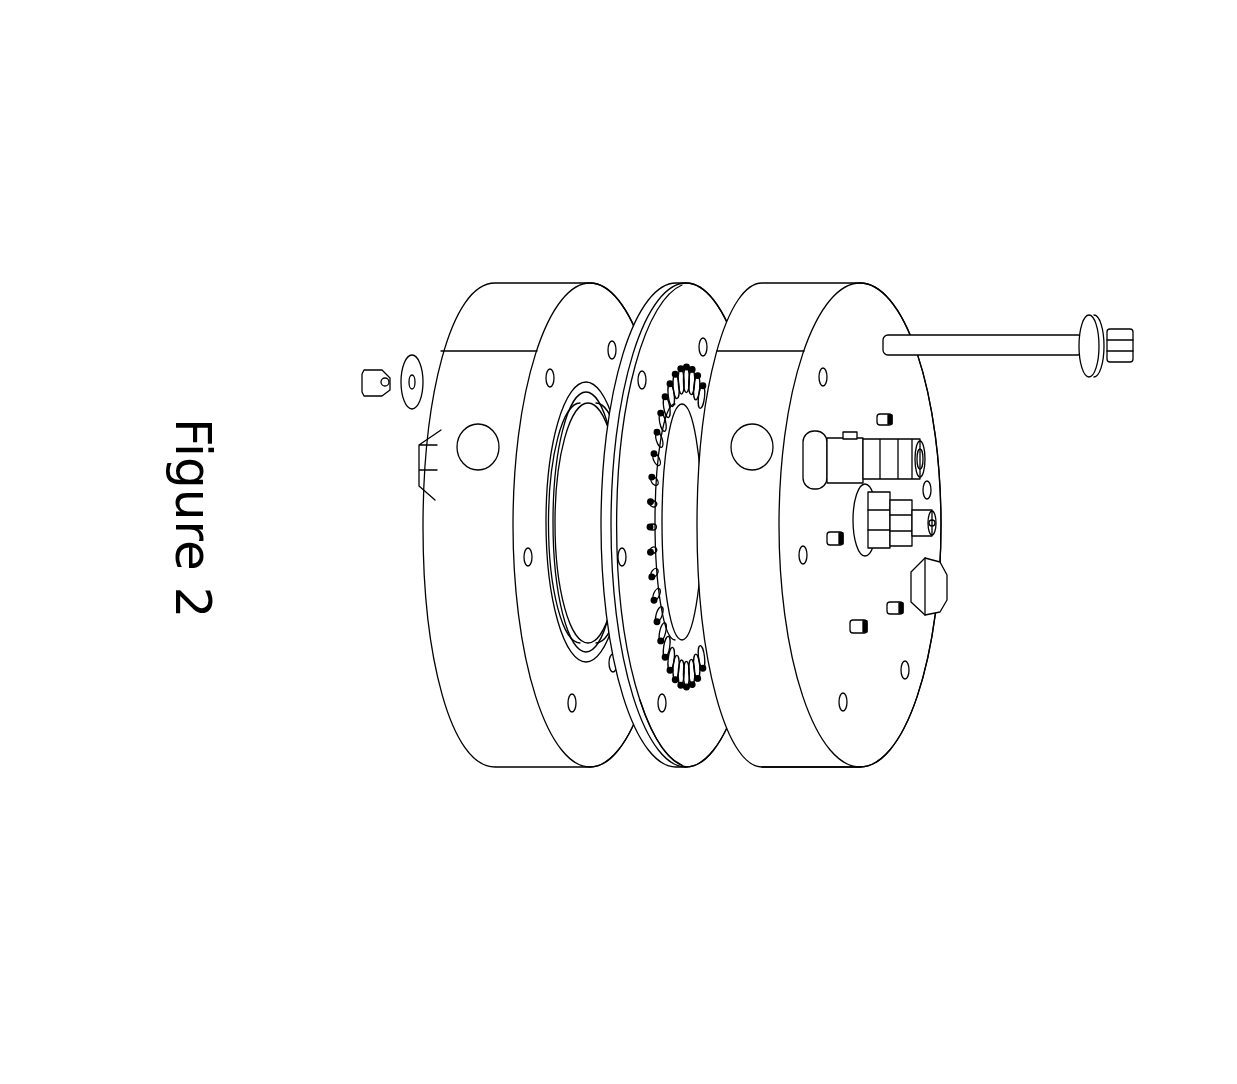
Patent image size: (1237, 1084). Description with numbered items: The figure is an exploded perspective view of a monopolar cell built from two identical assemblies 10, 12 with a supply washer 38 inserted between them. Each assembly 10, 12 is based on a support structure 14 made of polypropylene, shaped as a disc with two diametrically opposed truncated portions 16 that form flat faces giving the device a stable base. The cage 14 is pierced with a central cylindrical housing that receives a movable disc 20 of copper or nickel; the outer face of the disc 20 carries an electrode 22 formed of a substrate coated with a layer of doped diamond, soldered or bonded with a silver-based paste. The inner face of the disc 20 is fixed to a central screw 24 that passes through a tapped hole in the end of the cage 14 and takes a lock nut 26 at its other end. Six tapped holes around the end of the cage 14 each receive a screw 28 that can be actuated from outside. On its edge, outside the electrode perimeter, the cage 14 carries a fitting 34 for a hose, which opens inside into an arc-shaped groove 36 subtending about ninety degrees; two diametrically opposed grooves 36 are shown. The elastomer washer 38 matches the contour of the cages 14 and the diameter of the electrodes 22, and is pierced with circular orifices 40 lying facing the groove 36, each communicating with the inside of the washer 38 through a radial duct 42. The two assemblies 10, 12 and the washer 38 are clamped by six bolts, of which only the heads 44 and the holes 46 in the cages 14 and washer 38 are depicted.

The assembly 10 is at (417, 275).
The assembly 12 is at (854, 220).
The support structure 14 is at (815, 758).
The truncated portions 16 is at (475, 513).
The disc 20 is at (570, 520).
The electrode 22 is at (600, 483).
The central screw 24 is at (937, 527).
The lock nut 26 is at (897, 519).
The screw 28 is at (890, 418).
The fitting 34 is at (921, 463).
The groove 36 is at (610, 670).
The supply washer 38 is at (675, 240).
The circular orifices 40 is at (672, 690).
The radial duct 42 is at (692, 685).
The bolt heads 44 is at (982, 345).
The holes 46 is at (640, 378).